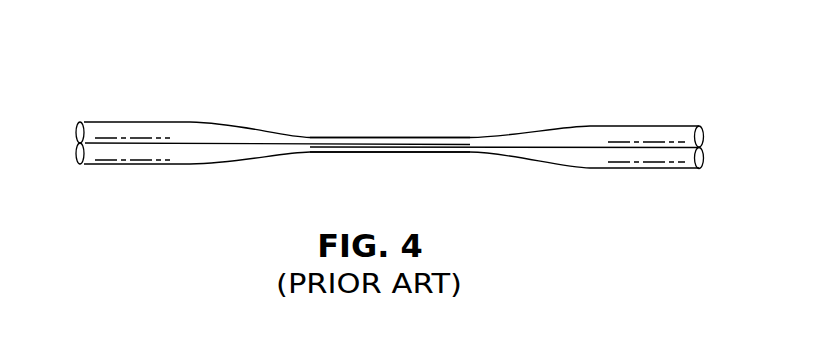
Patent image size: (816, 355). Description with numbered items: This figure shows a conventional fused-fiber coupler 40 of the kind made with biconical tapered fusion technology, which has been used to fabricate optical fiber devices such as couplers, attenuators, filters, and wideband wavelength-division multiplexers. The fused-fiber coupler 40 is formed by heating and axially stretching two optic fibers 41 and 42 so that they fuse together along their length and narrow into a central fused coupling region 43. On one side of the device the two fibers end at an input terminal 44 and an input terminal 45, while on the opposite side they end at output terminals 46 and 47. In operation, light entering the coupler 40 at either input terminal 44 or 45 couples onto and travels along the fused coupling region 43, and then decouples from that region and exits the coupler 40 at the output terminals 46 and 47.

The fused-fiber coupler 40 is at (412, 52).
The optic fiber 41 is at (204, 137).
The optic fiber 42 is at (205, 157).
The coupling region 43 is at (358, 137).
The input terminal 44 is at (77, 128).
The input terminal 45 is at (77, 157).
The output terminal 46 is at (702, 130).
The output terminal 47 is at (702, 160).